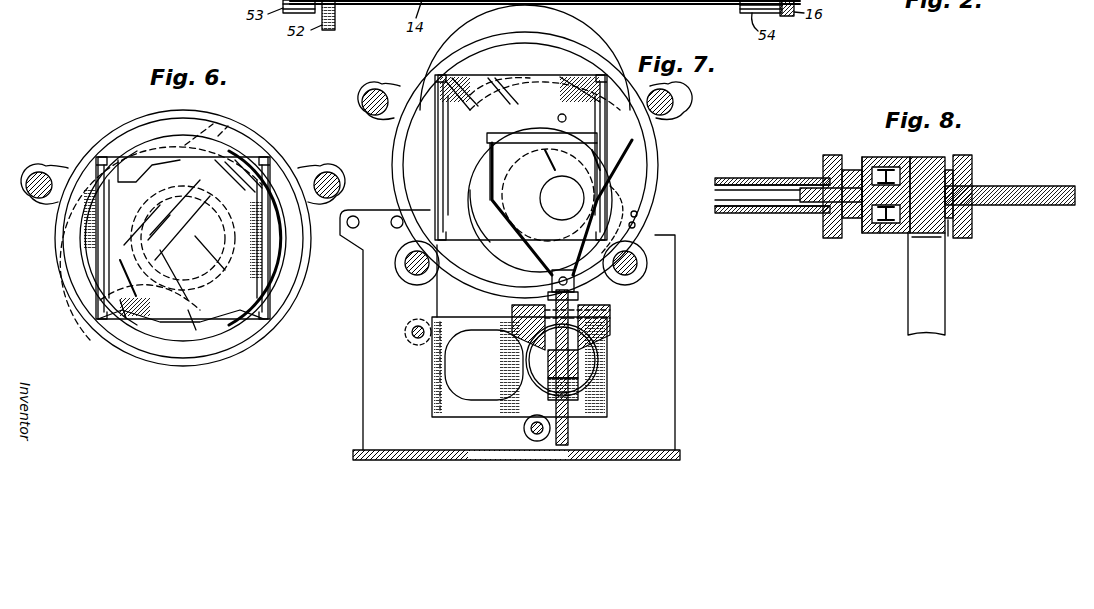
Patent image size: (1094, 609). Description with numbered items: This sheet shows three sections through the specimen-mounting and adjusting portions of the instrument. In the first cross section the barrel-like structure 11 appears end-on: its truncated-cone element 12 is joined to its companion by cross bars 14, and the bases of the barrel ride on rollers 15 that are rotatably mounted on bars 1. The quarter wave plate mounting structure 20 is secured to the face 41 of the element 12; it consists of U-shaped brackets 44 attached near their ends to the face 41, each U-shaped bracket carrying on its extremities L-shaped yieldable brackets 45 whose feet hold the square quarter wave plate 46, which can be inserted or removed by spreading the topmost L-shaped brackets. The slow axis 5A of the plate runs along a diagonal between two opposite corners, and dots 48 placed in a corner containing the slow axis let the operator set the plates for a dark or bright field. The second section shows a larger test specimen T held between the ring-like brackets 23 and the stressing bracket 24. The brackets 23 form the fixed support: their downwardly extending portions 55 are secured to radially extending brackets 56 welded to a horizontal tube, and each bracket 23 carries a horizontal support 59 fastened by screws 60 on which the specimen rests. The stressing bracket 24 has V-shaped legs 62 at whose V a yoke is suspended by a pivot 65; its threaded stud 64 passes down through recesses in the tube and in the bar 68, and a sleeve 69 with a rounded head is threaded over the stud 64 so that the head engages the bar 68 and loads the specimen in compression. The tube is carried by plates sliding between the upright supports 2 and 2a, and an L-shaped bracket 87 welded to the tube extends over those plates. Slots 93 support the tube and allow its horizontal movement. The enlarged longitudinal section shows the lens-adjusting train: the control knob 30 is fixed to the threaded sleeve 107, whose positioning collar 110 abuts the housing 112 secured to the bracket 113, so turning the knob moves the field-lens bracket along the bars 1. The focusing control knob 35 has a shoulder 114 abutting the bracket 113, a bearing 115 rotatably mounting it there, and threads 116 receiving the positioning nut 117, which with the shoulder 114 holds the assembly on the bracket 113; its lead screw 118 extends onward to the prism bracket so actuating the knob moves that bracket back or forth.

In FIG. 7, the bars 1 is at (417, 263).
In FIG. 7, the upright support 2 is at (358, 390).
In FIG. 7, the upright support 2a is at (668, 388).
In FIG. 6, the slow axis 5A is at (110, 350).
In FIG. 6, the barrel-like structure 11 is at (232, 116).
In FIG. 7, the barrel-like structure 11 is at (463, 50).
In FIG. 6, the element 12 is at (196, 124).
In FIG. 7, the element 12 is at (530, 55).
In FIG. 6, the cross bars 14 is at (40, 172).
In FIG. 7, the cross bars 14 is at (378, 90).
In FIG. 7, the rollers 15 is at (396, 252).
In FIG. 6, the quarter wave plate mounting structure 20 is at (225, 158).
In FIG. 7, the quarter wave plate mounting structure 20 is at (440, 140).
In FIG. 7, the brackets 23 is at (650, 180).
In FIG. 7, the stressing bracket 24 is at (520, 128).
In FIG. 8, the control knob 30 is at (828, 154).
In FIG. 8, the control knob 35 is at (972, 228).
In FIG. 6, the face 41 is at (128, 110).
In FIG. 6, the U-shaped brackets 44 is at (100, 262).
In FIG. 7, the U-shaped brackets 44 is at (440, 157).
In FIG. 6, the L-shaped yieldable brackets 45 is at (97, 162).
In FIG. 7, the L-shaped yieldable brackets 45 is at (437, 80).
In FIG. 6, the quarter wave plate 46 is at (180, 305).
In FIG. 7, the quarter wave plate 46 is at (485, 78).
In FIG. 7, the dots 48 is at (590, 76).
In FIG. 7, the downwardly extending portions 55 is at (600, 296).
In FIG. 7, the radially extending brackets 56 is at (610, 330).
In FIG. 7, the horizontal support 59 is at (550, 275).
In FIG. 7, the screws 60 is at (640, 222).
In FIG. 7, the V-shaped legs 62 is at (640, 150).
In FIG. 7, the threaded stud 64 is at (570, 440).
In FIG. 7, the pivot 65 is at (552, 296).
In FIG. 7, the bar 68 is at (580, 362).
In FIG. 7, the sleeve 69 is at (572, 430).
In FIG. 7, the L-shaped bracket 87 is at (528, 386).
In FIG. 7, the slot 93 is at (492, 337).
In FIG. 8, the sleeve 107 is at (740, 177).
In FIG. 8, the positioning collar 110 is at (848, 170).
In FIG. 8, the housing 112 is at (882, 156).
In FIG. 8, the bracket 113 is at (938, 156).
In FIG. 8, the shoulder 114 is at (948, 236).
In FIG. 8, the bearing 115 is at (930, 240).
In FIG. 8, the threads 116 is at (905, 238).
In FIG. 8, the positioning nut 117 is at (905, 165).
In FIG. 8, the shaft 118 is at (1043, 185).
In FIG. 7, the test specimen T is at (562, 198).